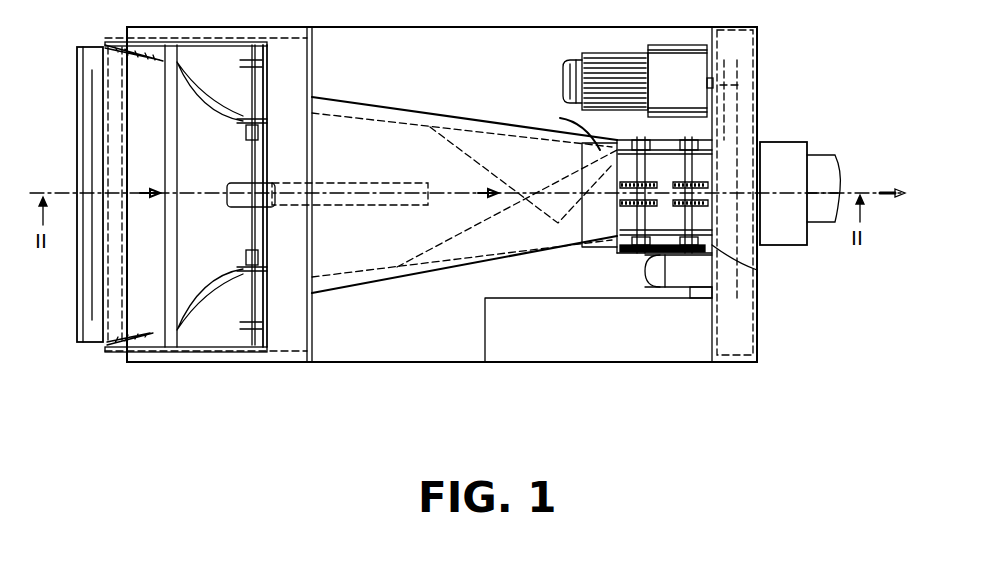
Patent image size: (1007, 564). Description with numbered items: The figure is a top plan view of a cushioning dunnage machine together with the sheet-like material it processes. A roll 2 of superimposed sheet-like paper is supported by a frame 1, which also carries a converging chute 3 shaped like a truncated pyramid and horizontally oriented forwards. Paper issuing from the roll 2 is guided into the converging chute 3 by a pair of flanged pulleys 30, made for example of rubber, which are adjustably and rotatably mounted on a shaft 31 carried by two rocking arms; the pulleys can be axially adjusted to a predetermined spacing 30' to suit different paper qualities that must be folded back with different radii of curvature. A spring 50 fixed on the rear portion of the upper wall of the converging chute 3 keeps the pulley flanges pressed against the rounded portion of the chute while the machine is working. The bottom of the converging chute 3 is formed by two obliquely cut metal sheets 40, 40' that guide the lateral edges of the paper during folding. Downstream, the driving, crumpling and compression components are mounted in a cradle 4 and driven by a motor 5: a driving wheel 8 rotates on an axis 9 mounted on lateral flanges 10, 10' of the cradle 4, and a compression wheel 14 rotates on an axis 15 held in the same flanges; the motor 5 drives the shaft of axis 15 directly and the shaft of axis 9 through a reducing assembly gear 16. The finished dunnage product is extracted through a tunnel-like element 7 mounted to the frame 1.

The frame 1 is at (432, 362).
The roll 2 is at (77, 318).
The converging chute 3 is at (342, 288).
The cradle 4 is at (689, 137).
The motor 5 is at (690, 290).
The tunnel-like element 7 is at (778, 142).
The driving wheel 8 is at (607, 248).
The axis 9 is at (572, 120).
The lateral flange 10 is at (765, 192).
The lateral flange 10' is at (755, 263).
The compression wheel 14 is at (808, 240).
The axis 15 is at (685, 177).
The reducing assembly gear 16 is at (625, 255).
The pulleys 30 is at (222, 195).
The predetermined spacing of pulleys 30' is at (222, 195).
The shaft 31 is at (265, 165).
The metal sheet 40 is at (507, 174).
The metal sheet 40' is at (521, 232).
The spring 50 is at (236, 208).